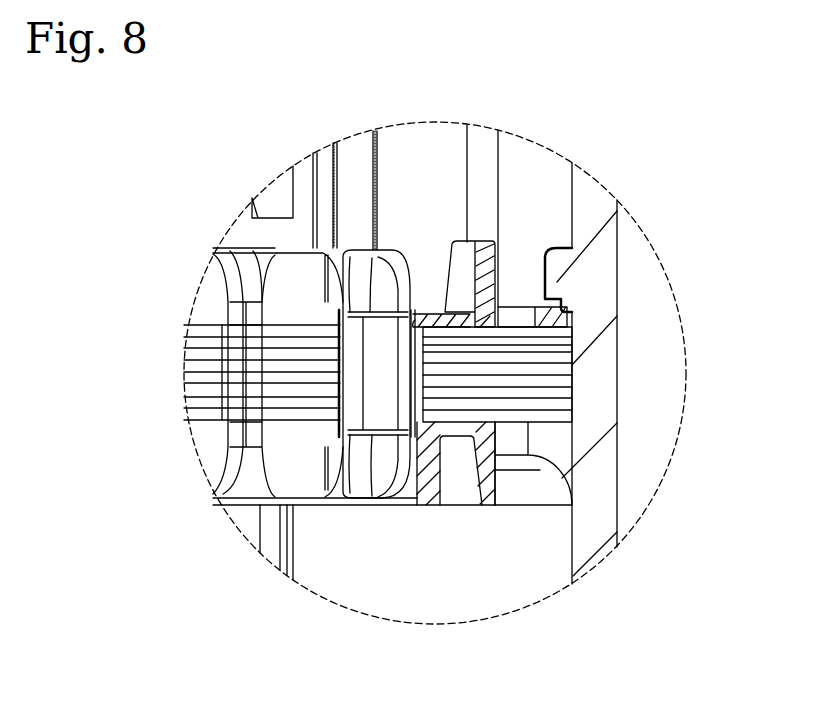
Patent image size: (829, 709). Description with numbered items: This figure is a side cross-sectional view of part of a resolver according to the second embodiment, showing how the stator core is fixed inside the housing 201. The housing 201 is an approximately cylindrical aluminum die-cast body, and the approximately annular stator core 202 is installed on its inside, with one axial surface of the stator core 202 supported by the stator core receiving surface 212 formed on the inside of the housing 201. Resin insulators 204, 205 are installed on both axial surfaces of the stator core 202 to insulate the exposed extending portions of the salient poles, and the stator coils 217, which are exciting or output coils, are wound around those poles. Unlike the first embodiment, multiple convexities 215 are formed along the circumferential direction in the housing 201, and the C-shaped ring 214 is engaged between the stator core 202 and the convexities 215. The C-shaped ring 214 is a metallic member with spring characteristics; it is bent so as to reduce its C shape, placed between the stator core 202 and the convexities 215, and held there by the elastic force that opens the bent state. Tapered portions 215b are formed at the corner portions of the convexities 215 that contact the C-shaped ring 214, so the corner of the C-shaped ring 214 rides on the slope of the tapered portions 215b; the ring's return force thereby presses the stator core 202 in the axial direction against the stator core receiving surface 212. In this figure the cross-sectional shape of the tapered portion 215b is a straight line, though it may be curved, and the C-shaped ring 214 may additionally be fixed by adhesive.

The stator coils 217 is at (375, 268).
The insulator 205 is at (488, 256).
The convexities 215 is at (556, 282).
The tapered portions 215b is at (557, 297).
The C-shaped ring 214 is at (568, 318).
The stator core 202 is at (557, 345).
The stator core receiving surface 212 is at (550, 427).
The housing 201 is at (595, 482).
The insulator 204 is at (433, 495).